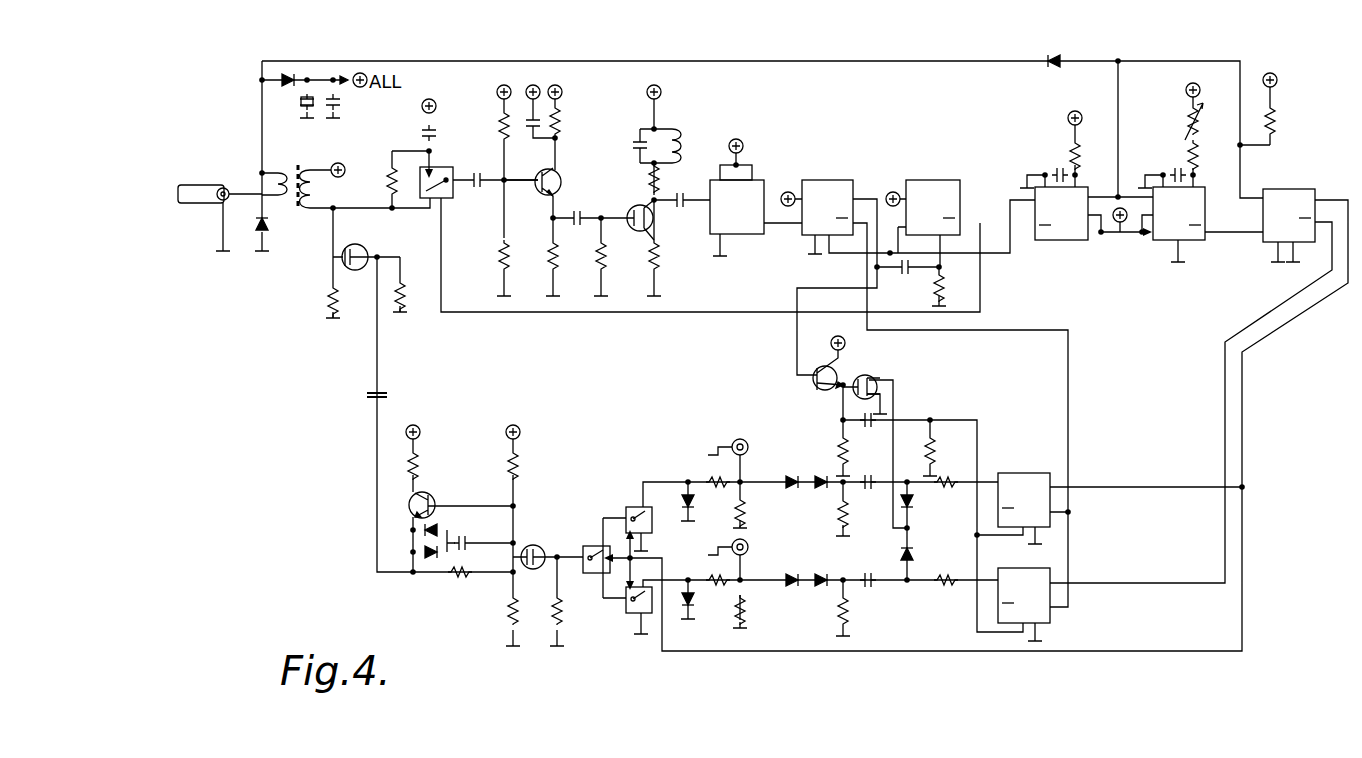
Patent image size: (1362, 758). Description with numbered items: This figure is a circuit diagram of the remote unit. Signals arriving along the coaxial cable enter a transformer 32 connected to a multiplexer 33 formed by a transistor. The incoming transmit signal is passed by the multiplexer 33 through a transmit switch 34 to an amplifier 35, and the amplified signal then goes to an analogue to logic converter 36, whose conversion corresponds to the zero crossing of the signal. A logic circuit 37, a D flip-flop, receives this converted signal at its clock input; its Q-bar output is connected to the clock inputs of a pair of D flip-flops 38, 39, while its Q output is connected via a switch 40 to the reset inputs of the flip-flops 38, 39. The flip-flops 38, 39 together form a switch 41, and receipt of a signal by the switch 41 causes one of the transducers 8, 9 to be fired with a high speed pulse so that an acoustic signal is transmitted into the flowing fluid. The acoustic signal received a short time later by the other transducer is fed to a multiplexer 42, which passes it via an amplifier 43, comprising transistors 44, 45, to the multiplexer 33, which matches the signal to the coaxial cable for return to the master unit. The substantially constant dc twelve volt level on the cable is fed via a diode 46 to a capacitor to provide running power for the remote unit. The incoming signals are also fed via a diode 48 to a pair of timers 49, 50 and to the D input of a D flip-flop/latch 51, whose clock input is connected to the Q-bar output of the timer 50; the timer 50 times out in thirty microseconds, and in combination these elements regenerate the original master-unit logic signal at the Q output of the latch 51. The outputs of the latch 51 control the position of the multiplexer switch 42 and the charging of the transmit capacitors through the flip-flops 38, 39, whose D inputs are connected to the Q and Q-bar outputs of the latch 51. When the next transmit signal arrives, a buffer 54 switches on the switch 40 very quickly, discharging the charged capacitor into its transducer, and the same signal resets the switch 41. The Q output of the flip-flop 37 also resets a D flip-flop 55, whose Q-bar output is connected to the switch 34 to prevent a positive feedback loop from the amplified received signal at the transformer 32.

The transducer 8 is at (732, 436).
The transducer 9 is at (745, 556).
The transformer 32 is at (302, 248).
The multiplexer 33 is at (357, 282).
The transmit switch 34 is at (459, 126).
The amplifier 35 is at (589, 152).
The analogue to logic converter 36 is at (771, 172).
The logic circuit 37 is at (826, 180).
The D flip-flop 38 is at (1018, 473).
The D flip-flop 39 is at (1045, 625).
The switch 40 is at (872, 373).
The switch 41 is at (1095, 537).
The multiplexer 42 is at (633, 502).
The amplifier 43 is at (474, 450).
The transistor 44 is at (411, 505).
The transistor 45 is at (546, 549).
The diode 46 is at (283, 86).
The diode 48 is at (1055, 55).
The timer 49 is at (1064, 245).
The timer 50 is at (1190, 245).
The D flip-flop/latch 51 is at (1292, 187).
The buffer 54 is at (813, 378).
The D flip-flop 55 is at (927, 180).